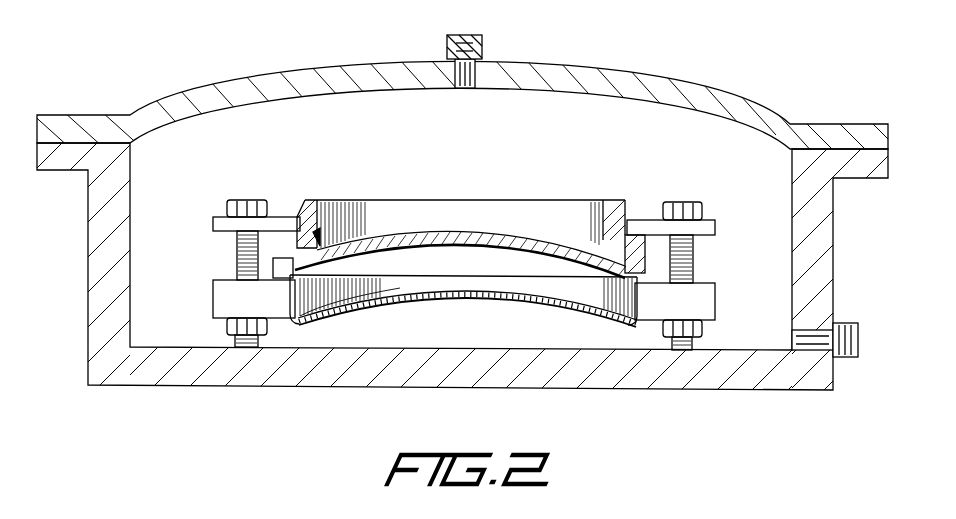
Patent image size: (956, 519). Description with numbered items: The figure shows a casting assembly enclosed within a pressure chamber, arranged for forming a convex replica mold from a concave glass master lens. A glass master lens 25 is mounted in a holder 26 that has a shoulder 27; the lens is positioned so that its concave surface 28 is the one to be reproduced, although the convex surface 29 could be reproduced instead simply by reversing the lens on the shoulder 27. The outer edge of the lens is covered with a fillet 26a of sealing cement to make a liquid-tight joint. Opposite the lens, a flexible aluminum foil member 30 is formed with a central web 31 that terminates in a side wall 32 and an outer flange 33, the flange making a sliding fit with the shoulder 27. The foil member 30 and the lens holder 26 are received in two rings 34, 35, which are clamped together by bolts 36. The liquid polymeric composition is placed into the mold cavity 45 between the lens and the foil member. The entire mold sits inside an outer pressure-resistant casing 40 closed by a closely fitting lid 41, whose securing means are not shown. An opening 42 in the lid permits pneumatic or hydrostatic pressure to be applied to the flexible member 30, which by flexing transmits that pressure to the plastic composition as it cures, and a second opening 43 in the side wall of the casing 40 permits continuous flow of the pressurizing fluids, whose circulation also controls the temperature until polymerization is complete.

The glass master lens 25 is at (521, 232).
The holder 26 is at (625, 207).
The fillet of sealing cement 26a is at (321, 238).
The shoulder 27 is at (648, 252).
The concave surface 28 is at (453, 247).
The convex surface 29 is at (455, 200).
The flexible aluminum foil member 30 is at (512, 306).
The central web 31 is at (433, 300).
The side wall 32 is at (300, 300).
The outer flange 33 is at (273, 268).
The ring 34 is at (703, 221).
The ring 35 is at (716, 296).
The bolts 36 is at (235, 246).
The outer pressure-resistant casing 40 is at (835, 240).
The lid 41 is at (606, 72).
The opening 42 is at (447, 37).
The second opening 43 is at (845, 323).
The mold cavity 45 is at (598, 299).